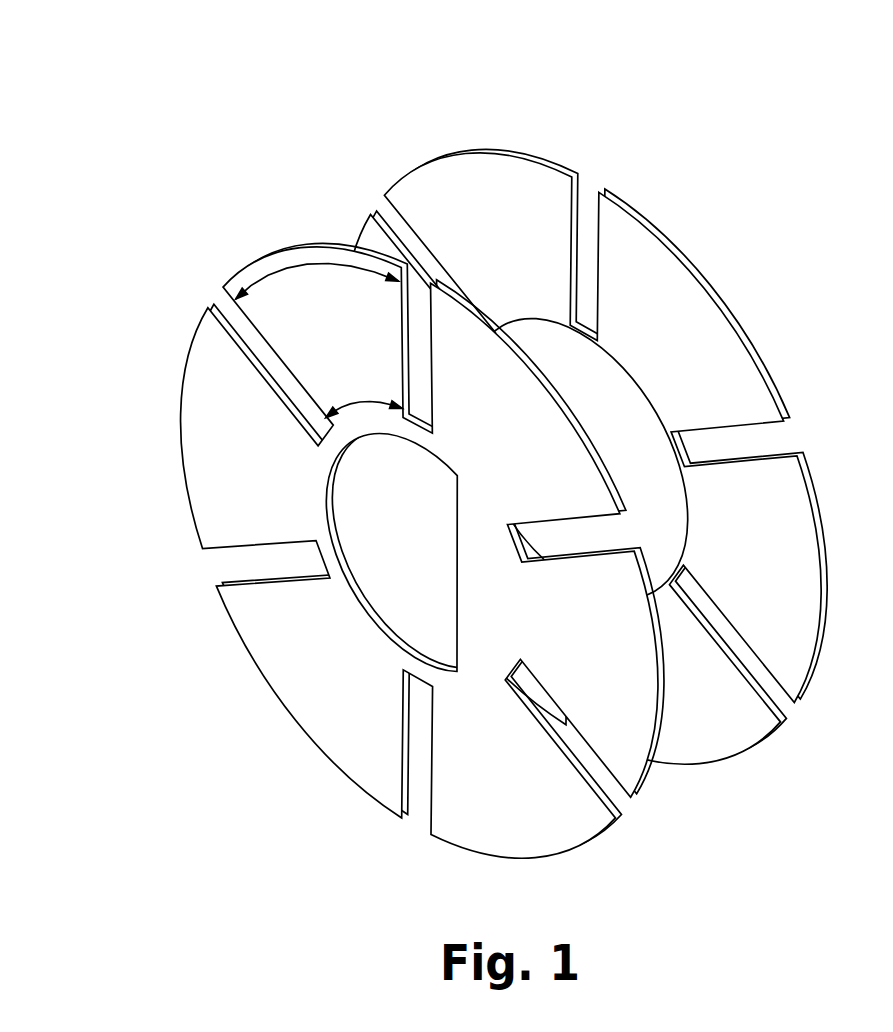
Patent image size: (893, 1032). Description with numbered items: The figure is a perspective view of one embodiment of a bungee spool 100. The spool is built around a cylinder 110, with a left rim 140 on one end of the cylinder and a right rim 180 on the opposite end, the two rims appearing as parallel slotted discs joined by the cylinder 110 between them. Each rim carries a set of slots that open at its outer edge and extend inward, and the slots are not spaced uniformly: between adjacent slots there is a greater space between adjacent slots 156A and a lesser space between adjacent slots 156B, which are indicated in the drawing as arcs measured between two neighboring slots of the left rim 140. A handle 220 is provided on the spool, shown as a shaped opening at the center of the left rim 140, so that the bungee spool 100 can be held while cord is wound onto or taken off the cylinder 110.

The bungee spool 100 is at (593, 99).
The cylinder 110 is at (578, 458).
The left rim 140 is at (422, 550).
The right rim 180 is at (569, 456).
The greater space between adjacent slots 156A is at (350, 397).
The lesser space between adjacent slots 156B is at (290, 262).
The handle 220 is at (418, 549).